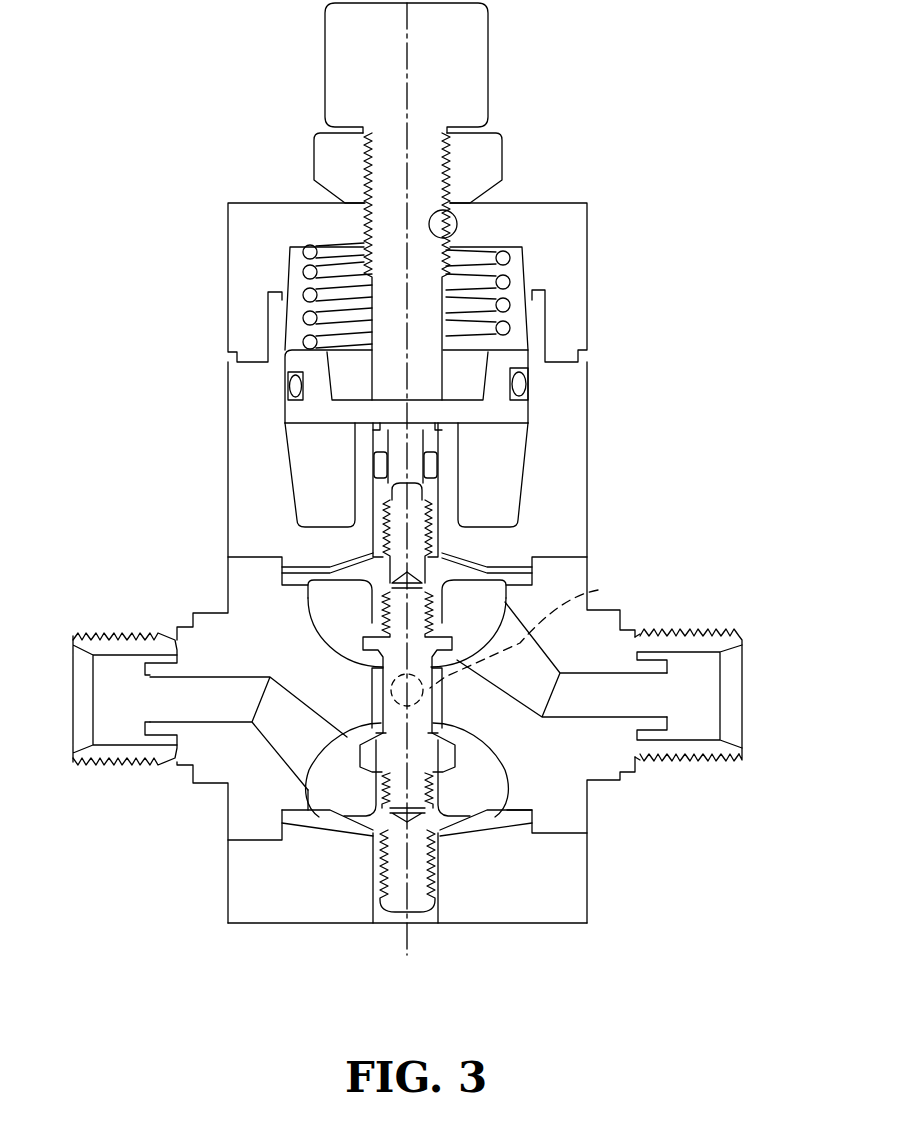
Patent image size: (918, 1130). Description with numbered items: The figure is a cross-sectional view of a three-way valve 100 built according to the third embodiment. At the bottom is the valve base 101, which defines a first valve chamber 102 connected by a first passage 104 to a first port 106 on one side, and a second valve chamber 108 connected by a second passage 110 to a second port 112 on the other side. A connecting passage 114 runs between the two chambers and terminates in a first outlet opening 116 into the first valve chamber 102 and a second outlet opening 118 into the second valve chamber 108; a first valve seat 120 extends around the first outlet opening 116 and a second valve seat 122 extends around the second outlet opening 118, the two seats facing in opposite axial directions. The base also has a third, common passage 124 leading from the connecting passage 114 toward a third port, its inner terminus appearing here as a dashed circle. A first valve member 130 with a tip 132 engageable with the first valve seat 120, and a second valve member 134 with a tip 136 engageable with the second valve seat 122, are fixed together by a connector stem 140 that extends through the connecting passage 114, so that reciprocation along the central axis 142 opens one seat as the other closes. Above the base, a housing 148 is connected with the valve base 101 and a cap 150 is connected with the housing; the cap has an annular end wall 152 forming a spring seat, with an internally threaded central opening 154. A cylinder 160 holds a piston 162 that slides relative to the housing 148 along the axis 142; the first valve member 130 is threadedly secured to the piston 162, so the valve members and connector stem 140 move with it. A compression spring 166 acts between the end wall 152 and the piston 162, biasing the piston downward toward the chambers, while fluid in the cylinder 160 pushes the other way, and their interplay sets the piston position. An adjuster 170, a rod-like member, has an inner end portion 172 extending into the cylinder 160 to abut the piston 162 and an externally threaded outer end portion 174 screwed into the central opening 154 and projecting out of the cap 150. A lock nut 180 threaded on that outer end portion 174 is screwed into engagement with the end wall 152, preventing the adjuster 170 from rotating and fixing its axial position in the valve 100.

The valve 100 is at (332, 944).
The valve base 101 is at (215, 834).
The first valve chamber 102 is at (483, 587).
The first passage 104 is at (602, 692).
The first port 106 is at (700, 677).
The second valve chamber 108 is at (342, 803).
The second passage 110 is at (197, 700).
The second port 112 is at (117, 707).
The connecting passage 114 is at (353, 704).
The first outlet opening 116 is at (177, 765).
The second outlet opening 118 is at (440, 720).
The first valve seat 120 is at (370, 668).
The second valve seat 122 is at (440, 735).
The third passage 124 is at (538, 628).
The first valve member 130 is at (355, 602).
The tip 132 is at (366, 642).
The second valve member 134 is at (463, 814).
The tip 136 is at (453, 772).
The connector stem 140 is at (356, 742).
The axis 142 is at (408, 62).
The housing 148 is at (214, 468).
The cap 150 is at (603, 215).
The annular end wall 152 is at (545, 217).
The central opening 154 is at (456, 235).
The cylinder 160 is at (497, 468).
The piston 162 is at (271, 410).
The compression spring 166 is at (297, 304).
The adjuster 170 is at (503, 31).
The inner end portion 172 is at (422, 373).
The outer end portion 174 is at (392, 210).
The lock nut 180 is at (299, 159).